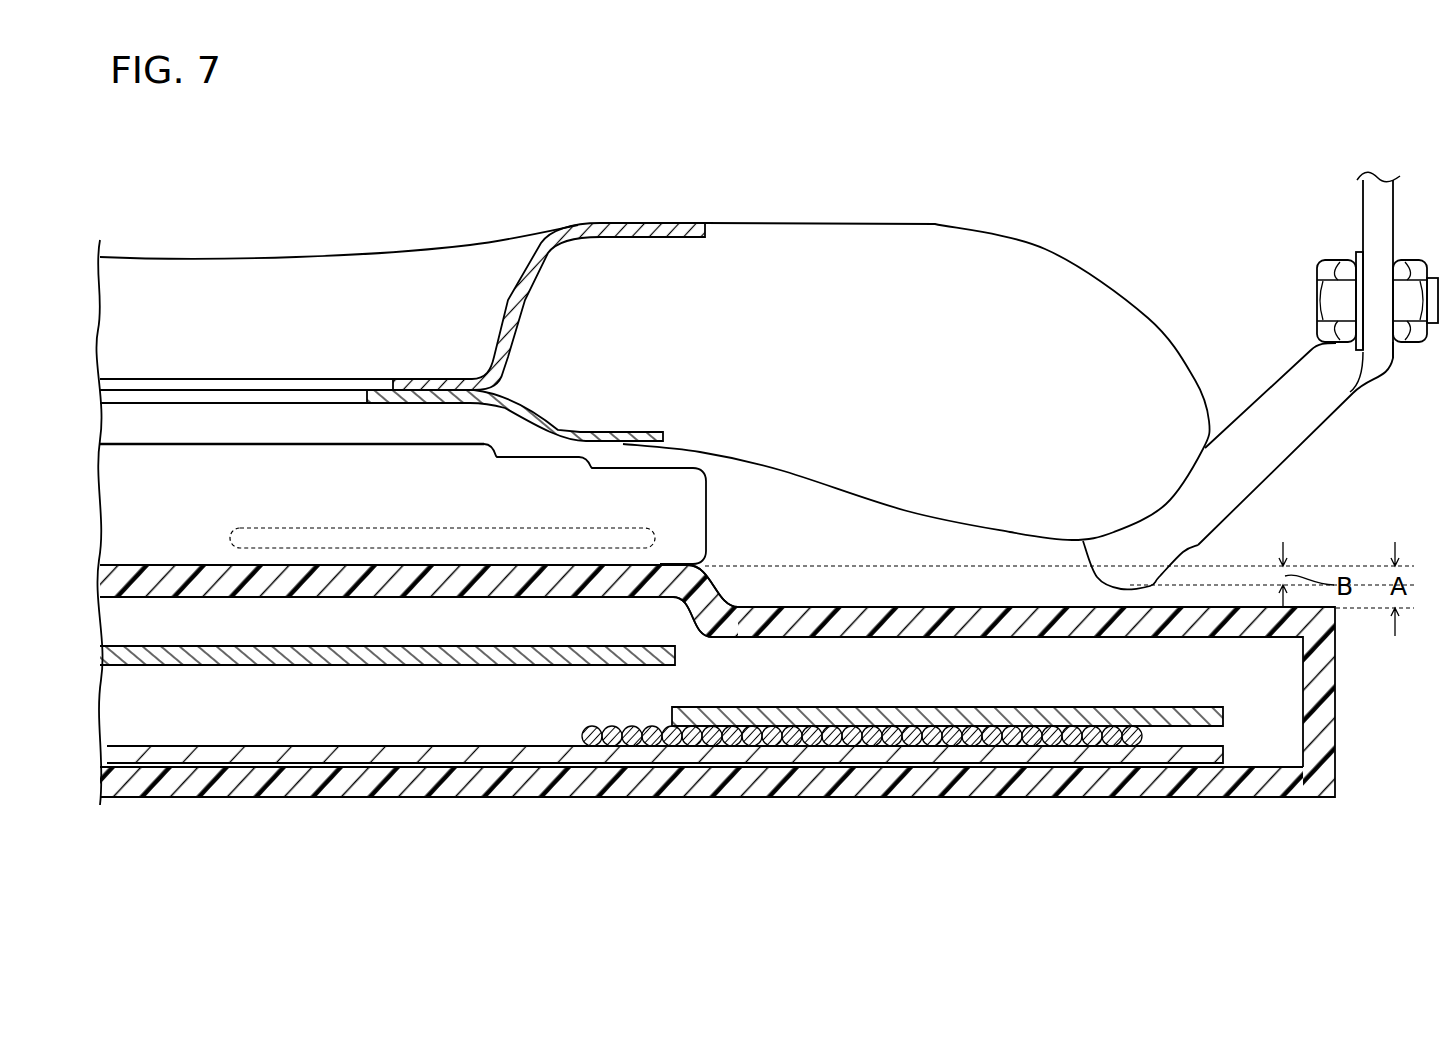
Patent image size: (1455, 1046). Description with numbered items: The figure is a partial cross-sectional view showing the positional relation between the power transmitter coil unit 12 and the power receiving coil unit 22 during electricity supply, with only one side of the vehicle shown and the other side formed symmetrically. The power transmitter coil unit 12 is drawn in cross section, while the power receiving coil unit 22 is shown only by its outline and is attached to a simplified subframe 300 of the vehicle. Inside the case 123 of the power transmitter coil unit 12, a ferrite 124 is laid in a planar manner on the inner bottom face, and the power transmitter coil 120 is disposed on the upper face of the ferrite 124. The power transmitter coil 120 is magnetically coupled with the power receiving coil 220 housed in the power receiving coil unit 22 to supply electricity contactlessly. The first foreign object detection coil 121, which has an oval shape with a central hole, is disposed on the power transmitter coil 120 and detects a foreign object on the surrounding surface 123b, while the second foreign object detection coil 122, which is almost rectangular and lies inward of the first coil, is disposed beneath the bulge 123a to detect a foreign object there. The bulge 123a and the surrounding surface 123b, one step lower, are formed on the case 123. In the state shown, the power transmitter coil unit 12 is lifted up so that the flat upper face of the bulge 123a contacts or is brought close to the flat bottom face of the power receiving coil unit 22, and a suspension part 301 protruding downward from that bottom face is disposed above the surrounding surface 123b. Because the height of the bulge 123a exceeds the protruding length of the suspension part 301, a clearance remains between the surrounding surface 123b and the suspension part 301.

The power transmitter coil unit 12 is at (881, 800).
The power receiving coil unit 22 is at (706, 515).
The power receiving coil 220 is at (655, 540).
The power transmitter coil 120 is at (790, 740).
The first foreign object detection coil 121 is at (1183, 717).
The second foreign object detection coil 122 is at (463, 655).
The case 123 is at (762, 681).
The bulge 123a is at (483, 582).
The surrounding surface 123b is at (905, 602).
The ferrite 124 is at (1068, 750).
The subframe 300 is at (430, 275).
The suspension part 301 is at (1302, 428).